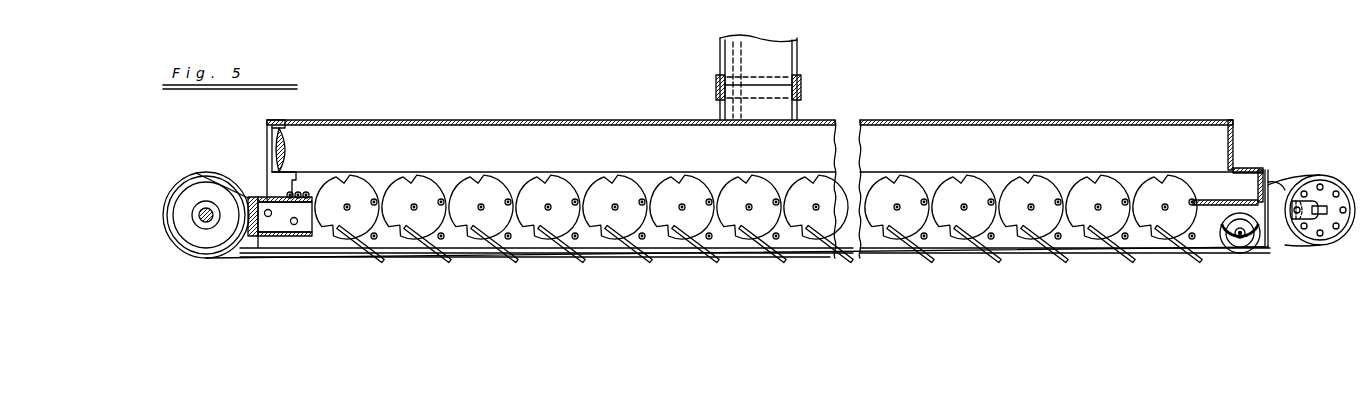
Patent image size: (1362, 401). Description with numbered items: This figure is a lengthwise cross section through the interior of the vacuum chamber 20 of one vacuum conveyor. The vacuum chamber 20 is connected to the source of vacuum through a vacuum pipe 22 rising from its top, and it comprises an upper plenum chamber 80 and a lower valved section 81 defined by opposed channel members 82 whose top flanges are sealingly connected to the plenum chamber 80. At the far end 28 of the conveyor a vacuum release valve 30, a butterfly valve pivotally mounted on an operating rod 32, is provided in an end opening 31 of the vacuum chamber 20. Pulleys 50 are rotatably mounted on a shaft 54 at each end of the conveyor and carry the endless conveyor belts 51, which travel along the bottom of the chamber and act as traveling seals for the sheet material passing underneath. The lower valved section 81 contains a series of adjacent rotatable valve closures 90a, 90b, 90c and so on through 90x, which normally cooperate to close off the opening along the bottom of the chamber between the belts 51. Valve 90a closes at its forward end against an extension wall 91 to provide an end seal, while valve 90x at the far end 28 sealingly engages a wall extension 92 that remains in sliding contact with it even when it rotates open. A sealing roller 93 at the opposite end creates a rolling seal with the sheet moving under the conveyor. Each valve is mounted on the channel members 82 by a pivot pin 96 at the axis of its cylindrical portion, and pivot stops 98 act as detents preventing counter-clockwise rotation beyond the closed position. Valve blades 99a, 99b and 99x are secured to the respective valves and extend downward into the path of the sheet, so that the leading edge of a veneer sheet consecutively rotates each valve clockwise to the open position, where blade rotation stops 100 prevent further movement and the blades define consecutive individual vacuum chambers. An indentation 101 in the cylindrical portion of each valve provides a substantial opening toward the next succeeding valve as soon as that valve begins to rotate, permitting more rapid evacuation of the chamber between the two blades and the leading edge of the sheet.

The vacuum chamber 20 is at (1004, 118).
The vacuum pipe 22 is at (782, 55).
The far end 28 is at (320, 259).
The vacuum release valve 30 is at (267, 160).
The end opening 31 is at (266, 137).
The operating rod 32 is at (286, 147).
The pulley 50 is at (203, 178).
The endless conveyor belt 51 is at (221, 257).
The shaft 54 is at (204, 223).
The upper plenum chamber 80 is at (579, 153).
The lower valved section 81 is at (652, 193).
The channel member 82 is at (1222, 178).
The rotatable valve closure 90x is at (354, 181).
The rotatable valve closure 90a is at (1168, 181).
The rotatable valve closure 90b is at (1092, 181).
The rotatable valve closure 90c is at (1022, 181).
The extension wall 91 is at (1227, 200).
The wall extension 92 is at (300, 182).
The sealing roller 93 is at (1240, 254).
The pivot pin 96 is at (415, 203).
The pivot stop 98 is at (578, 199).
The valve blade 99x is at (383, 265).
The valve blade 99a is at (1198, 264).
The valve blade 99b is at (1130, 264).
The blade rotation stop 100 is at (510, 240).
The indentation 101 is at (650, 241).